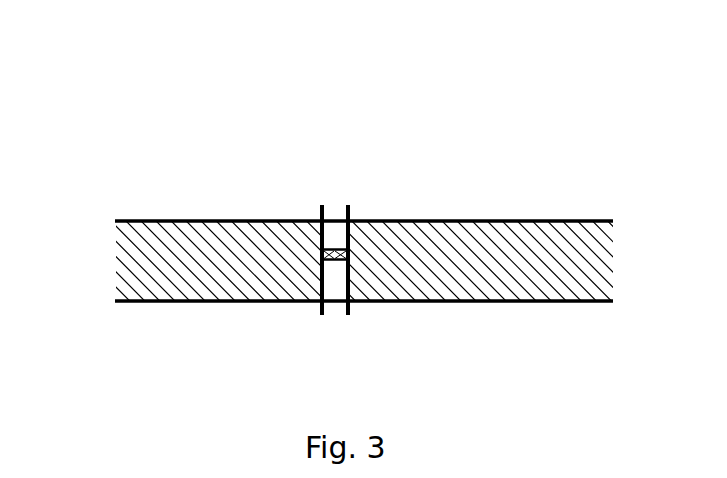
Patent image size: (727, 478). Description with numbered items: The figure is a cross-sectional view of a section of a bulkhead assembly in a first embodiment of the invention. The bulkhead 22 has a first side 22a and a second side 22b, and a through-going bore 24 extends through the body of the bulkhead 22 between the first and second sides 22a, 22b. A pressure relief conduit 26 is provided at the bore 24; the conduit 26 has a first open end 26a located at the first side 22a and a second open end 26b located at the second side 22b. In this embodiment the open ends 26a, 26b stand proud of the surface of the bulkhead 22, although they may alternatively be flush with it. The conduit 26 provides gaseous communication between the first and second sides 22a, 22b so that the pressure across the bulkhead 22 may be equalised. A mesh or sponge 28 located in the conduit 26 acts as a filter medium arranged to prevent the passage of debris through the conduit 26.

The bulkhead 22 is at (361, 222).
The first side 22a is at (562, 220).
The second side 22b is at (147, 303).
The through-going bore 24 is at (320, 233).
The pressure relief conduit 26 is at (351, 211).
The first open end 26a is at (326, 175).
The second open end 26b is at (308, 335).
The mesh or sponge 28 is at (333, 260).